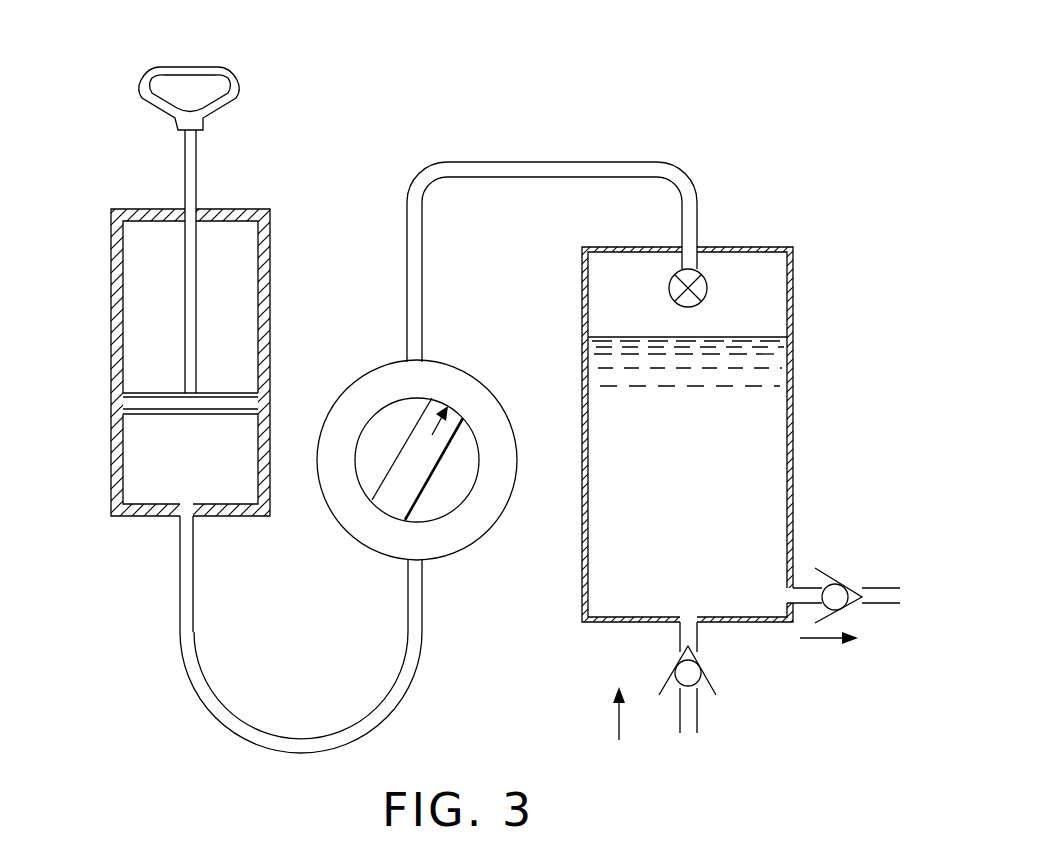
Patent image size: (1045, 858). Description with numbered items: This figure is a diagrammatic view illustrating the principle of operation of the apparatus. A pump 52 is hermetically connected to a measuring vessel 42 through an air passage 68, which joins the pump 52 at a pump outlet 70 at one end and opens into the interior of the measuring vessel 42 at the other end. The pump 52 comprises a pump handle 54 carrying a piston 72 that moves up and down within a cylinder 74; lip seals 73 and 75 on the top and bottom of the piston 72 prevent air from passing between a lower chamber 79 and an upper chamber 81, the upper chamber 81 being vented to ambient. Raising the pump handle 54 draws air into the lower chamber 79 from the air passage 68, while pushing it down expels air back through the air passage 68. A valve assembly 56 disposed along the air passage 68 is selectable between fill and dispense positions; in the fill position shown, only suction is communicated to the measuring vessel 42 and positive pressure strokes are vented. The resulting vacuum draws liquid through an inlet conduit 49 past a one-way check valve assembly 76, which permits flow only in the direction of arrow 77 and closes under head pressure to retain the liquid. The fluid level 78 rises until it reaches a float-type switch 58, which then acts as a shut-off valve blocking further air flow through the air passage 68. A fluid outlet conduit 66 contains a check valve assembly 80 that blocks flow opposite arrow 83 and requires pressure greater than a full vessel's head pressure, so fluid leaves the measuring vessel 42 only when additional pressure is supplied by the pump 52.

The measuring vessel 42 is at (795, 381).
The inlet conduit 49 is at (680, 642).
The pump 52 is at (93, 270).
The pump handle 54 is at (162, 65).
The valve assembly 56 is at (357, 346).
The switch 58 is at (703, 277).
The fluid outlet conduit 66 is at (803, 587).
The air passage 68 is at (524, 162).
The pump outlet 70 is at (183, 520).
The piston 72 is at (130, 400).
The lip seal 73 is at (130, 397).
The cylinder 74 is at (113, 480).
The lip seal 75 is at (128, 413).
The check valve assembly 76 is at (700, 690).
The arrow 77 is at (618, 722).
The fluid level 78 is at (755, 337).
The lower chamber 79 is at (240, 488).
The check valve assembly 80 is at (840, 586).
The upper chamber 81 is at (232, 240).
The arrow 83 is at (825, 645).